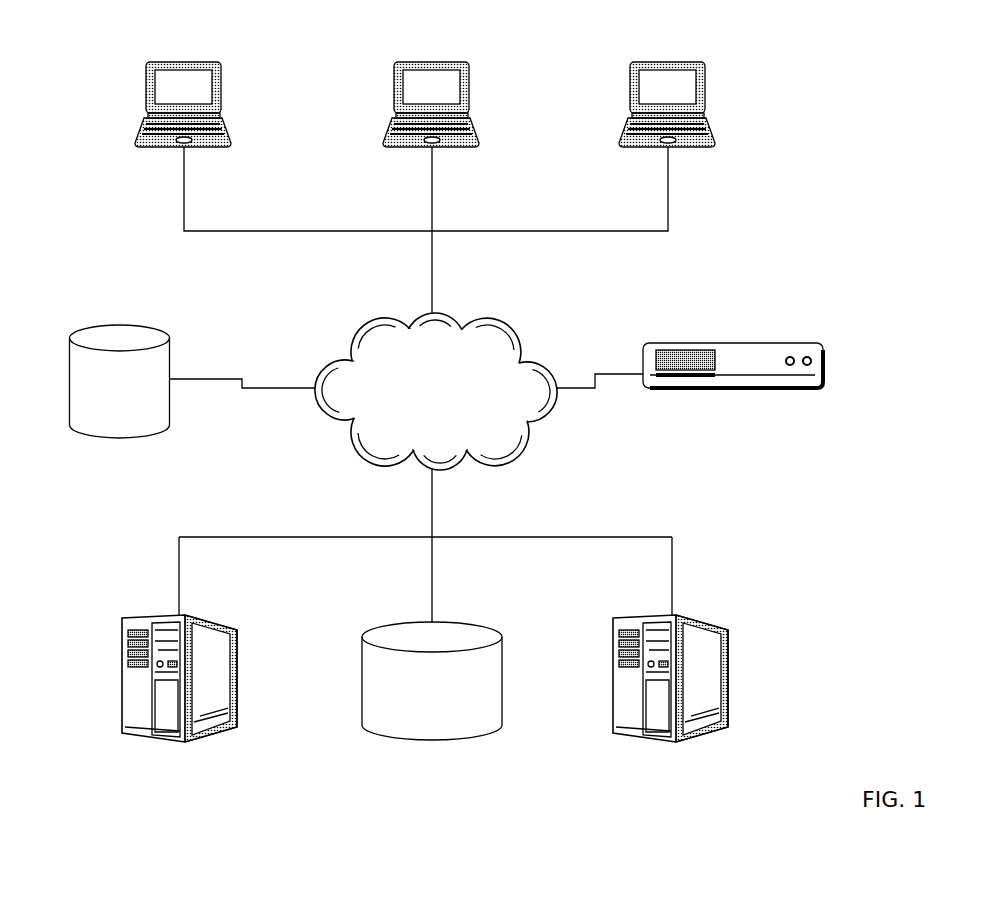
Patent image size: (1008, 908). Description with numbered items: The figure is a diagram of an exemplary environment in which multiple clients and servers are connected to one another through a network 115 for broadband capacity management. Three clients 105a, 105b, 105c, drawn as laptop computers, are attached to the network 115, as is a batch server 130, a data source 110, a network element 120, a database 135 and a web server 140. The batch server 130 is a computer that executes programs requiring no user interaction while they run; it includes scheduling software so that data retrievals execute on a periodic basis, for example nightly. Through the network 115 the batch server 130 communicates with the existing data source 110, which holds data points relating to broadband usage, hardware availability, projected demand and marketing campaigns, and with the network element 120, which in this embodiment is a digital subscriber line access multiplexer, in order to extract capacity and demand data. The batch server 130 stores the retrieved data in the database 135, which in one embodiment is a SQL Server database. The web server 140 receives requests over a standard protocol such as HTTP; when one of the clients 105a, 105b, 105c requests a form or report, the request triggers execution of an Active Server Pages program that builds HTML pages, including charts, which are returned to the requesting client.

The client 105a is at (138, 107).
The client 105b is at (392, 108).
The client 105c is at (630, 108).
The data source 110 is at (100, 320).
The network 115 is at (340, 340).
The network element 120 is at (643, 350).
The batch server 130 is at (112, 660).
The database 135 is at (352, 660).
The web server 140 is at (603, 670).